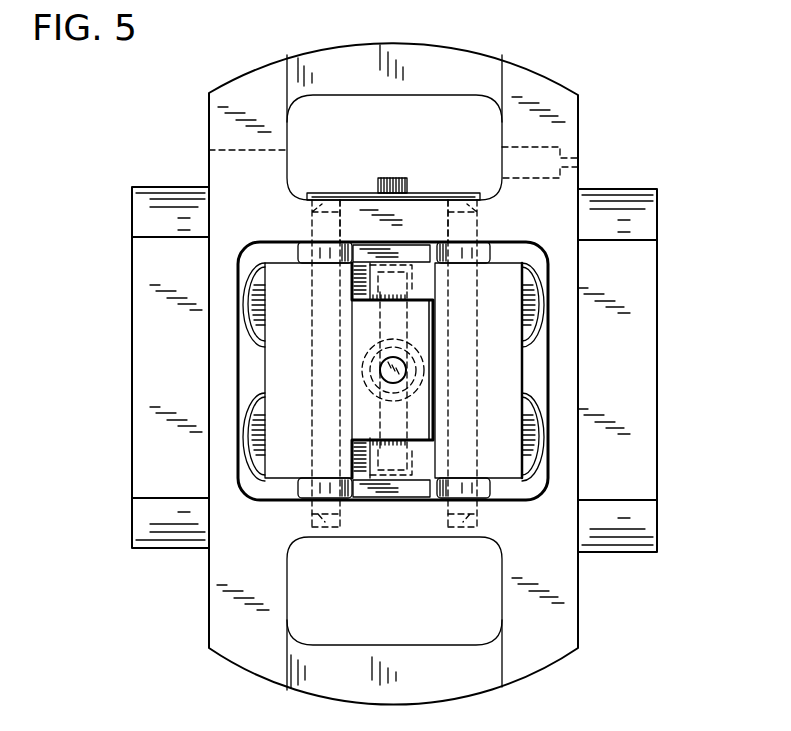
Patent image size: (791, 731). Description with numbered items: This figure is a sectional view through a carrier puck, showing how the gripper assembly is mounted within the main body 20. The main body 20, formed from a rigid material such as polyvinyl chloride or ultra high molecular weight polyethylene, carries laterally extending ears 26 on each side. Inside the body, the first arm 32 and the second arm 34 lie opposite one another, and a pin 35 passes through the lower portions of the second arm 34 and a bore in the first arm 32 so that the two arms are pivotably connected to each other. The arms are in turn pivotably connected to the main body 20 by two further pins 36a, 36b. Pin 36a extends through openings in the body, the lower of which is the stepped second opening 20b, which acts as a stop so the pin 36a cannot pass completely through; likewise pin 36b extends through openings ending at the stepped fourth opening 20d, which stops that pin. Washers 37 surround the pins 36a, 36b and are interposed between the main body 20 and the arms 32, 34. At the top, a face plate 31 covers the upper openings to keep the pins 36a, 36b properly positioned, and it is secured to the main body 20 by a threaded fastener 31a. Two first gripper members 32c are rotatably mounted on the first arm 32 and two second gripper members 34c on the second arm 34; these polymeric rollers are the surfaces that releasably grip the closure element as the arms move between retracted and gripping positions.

The main body 20 is at (645, 402).
The second opening 20b is at (312, 512).
The fourth opening 20d is at (477, 512).
The laterally extending ears 26 is at (147, 445).
The face plate 31 is at (358, 194).
The threaded fastener 31a is at (389, 178).
The first arm 32 is at (280, 458).
The first gripper members 32c is at (253, 313).
The second arm 34 is at (508, 468).
The second gripper members 34c is at (543, 305).
The pin 35 is at (375, 440).
The pin 36a is at (313, 222).
The pin 36b is at (470, 227).
The washers 37 is at (303, 252).